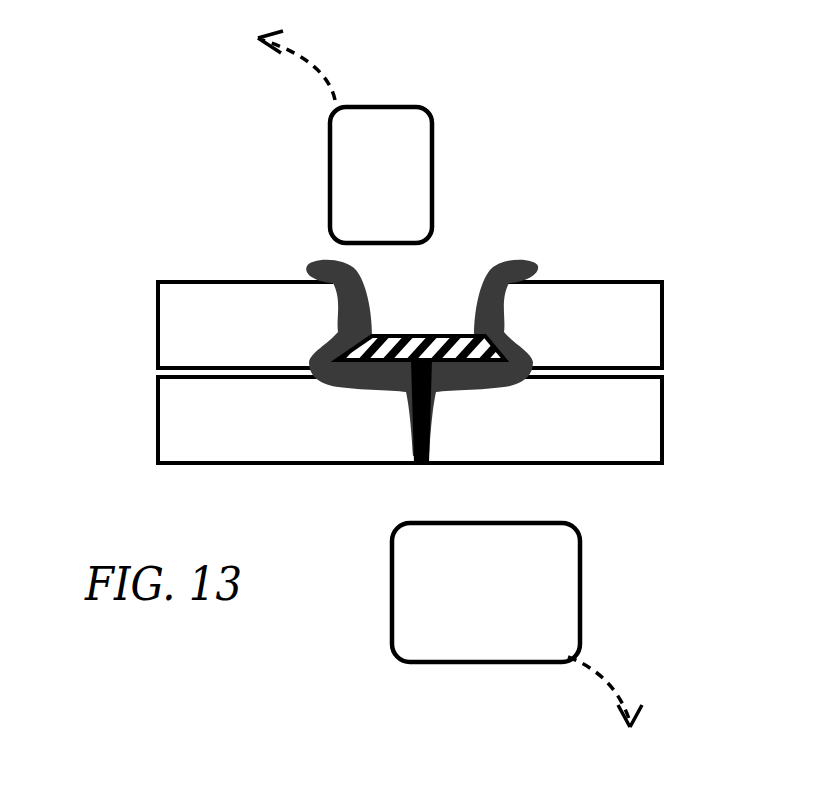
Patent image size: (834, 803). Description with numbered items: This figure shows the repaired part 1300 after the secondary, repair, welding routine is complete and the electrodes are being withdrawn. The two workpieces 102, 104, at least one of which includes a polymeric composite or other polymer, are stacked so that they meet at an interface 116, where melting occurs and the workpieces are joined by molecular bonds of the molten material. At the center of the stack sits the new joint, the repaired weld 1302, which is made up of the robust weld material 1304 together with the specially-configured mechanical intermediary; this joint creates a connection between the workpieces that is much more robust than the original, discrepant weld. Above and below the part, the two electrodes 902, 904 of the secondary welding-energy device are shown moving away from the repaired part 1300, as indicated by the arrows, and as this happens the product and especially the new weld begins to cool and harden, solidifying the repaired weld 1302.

The workpiece 102 is at (265, 353).
The workpiece 104 is at (250, 442).
The interface 116 is at (360, 376).
The electrode 902 is at (413, 197).
The electrode 904 is at (518, 601).
The repaired part 1300 is at (429, 320).
The repaired weld 1302 is at (452, 312).
The robust weld material 1304 is at (350, 383).